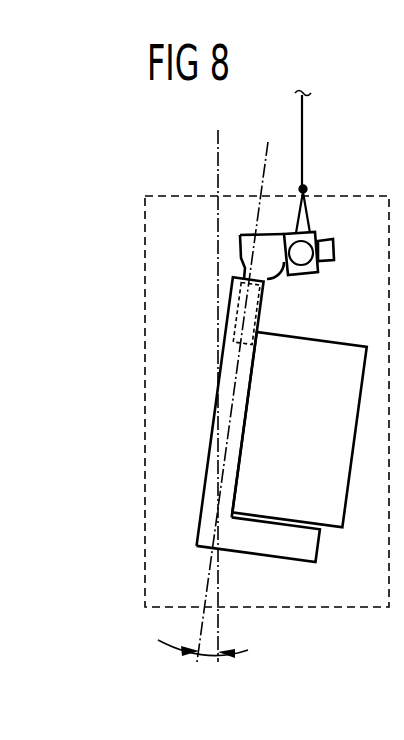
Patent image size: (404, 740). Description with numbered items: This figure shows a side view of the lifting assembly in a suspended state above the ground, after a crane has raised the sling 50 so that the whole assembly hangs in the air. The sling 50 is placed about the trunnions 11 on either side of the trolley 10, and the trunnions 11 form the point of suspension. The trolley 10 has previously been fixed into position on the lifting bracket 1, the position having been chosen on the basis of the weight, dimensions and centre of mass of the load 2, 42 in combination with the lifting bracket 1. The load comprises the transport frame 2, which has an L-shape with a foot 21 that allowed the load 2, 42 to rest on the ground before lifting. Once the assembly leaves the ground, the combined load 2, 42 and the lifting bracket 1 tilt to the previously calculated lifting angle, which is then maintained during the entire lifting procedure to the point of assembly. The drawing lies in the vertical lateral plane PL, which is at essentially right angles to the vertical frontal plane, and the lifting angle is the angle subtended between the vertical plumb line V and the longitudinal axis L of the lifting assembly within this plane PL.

The sling 50 is at (304, 133).
The trolley 10 is at (318, 238).
The lifting bracket 1 is at (335, 257).
The trunnions 11 is at (303, 252).
The transport frame 2 is at (232, 310).
The load 42 is at (337, 357).
The foot 21 is at (307, 543).
The vertical lateral plane PL is at (357, 602).
The vertical plumb line V is at (216, 143).
The longitudinal axis L is at (267, 150).